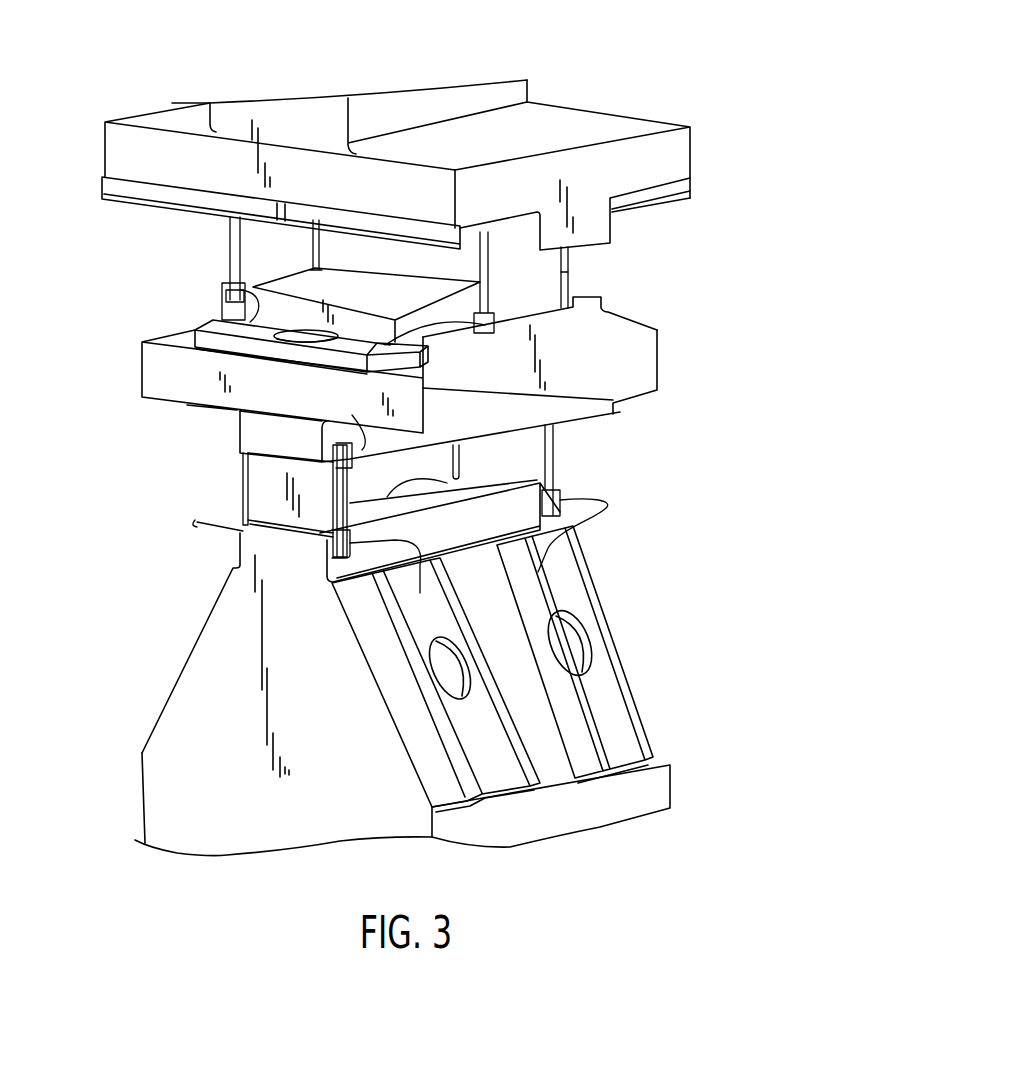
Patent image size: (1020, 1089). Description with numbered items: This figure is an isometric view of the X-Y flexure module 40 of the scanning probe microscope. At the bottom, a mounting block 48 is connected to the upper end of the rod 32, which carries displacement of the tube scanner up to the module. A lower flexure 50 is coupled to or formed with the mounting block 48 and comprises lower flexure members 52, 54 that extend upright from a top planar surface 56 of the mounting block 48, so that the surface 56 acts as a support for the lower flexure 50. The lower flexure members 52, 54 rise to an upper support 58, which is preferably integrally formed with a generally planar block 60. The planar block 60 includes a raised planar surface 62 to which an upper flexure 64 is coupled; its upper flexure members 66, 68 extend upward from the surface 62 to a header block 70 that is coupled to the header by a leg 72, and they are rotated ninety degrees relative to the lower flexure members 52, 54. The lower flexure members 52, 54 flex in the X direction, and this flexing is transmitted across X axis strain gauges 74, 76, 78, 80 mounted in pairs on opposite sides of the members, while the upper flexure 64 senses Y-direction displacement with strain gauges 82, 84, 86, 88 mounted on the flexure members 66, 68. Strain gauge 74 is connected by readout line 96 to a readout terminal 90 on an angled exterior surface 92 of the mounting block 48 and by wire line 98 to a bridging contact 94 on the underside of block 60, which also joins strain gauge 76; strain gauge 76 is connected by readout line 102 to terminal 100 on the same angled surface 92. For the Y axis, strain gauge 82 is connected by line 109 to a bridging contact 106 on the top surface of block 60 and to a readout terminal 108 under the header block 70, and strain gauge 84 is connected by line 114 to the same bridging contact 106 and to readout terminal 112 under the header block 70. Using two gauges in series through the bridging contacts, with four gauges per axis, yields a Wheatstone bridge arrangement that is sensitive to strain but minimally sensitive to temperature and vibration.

The rod 32 is at (157, 804).
The flexure module 40 is at (79, 131).
The mounting block 48 is at (185, 693).
The lower flexure 50 is at (229, 485).
The lower flexure member 52 is at (267, 495).
The lower flexure member 54 is at (530, 468).
The top planar surface 56 is at (467, 500).
The upper support 58 is at (256, 440).
The planar block 60 is at (150, 368).
The raised planar surface 62 is at (547, 327).
The upper flexure 64 is at (214, 246).
The upper flexure member 66 is at (253, 258).
The upper flexure member 68 is at (557, 268).
The header block 70 is at (683, 158).
The leg 72 is at (480, 85).
The X axis strain gauge 74 is at (318, 528).
The X axis strain gauge 76 is at (557, 460).
The X axis strain gauge 78 is at (246, 468).
The X axis strain gauge 80 is at (452, 470).
The strain gauge 82 is at (228, 227).
The strain gauge 84 is at (474, 280).
The strain gauge 86 is at (320, 240).
The strain gauge 88 is at (567, 273).
The readout terminal 90 is at (443, 608).
The angled exterior surface 92 is at (653, 743).
The bridging contact 94 is at (593, 408).
The readout line 96 is at (407, 550).
The wire line 98 is at (393, 443).
The terminal 100 is at (613, 697).
The readout line 102 is at (607, 508).
The bridging contact 106 is at (268, 352).
The readout terminal 108 is at (123, 188).
The line 109 is at (252, 313).
The readout terminal 112 is at (330, 211).
The line 114 is at (445, 330).